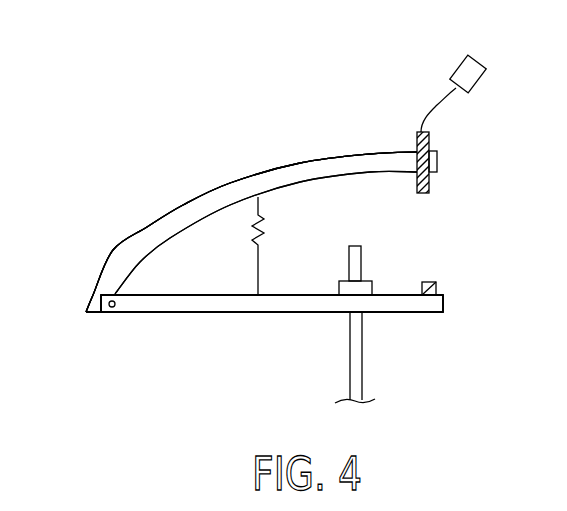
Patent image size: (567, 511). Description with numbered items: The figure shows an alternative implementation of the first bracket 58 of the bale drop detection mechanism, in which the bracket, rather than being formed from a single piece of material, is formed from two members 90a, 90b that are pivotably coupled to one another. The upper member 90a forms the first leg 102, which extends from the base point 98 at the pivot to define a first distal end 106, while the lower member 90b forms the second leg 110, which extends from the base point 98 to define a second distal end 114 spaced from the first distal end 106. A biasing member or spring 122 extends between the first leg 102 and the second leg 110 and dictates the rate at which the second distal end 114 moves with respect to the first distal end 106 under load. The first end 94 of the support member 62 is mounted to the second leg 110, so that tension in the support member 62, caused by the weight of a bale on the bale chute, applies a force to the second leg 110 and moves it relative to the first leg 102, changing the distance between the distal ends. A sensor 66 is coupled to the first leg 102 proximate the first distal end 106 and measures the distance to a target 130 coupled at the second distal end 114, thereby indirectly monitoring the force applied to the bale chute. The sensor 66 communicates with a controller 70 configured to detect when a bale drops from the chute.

The first bracket 58 is at (91, 210).
The base point 98 is at (102, 276).
The first member 90a is at (183, 205).
The second member 90b is at (198, 313).
The first leg 102 is at (300, 176).
The spring 122 is at (265, 230).
The first end 94 is at (355, 246).
The target 130 is at (430, 282).
The sensor 66 is at (429, 134).
The first distal end 106 is at (437, 165).
The controller 70 is at (482, 64).
The second distal end 114 is at (443, 306).
The support member 62 is at (362, 372).
The second leg 110 is at (287, 306).